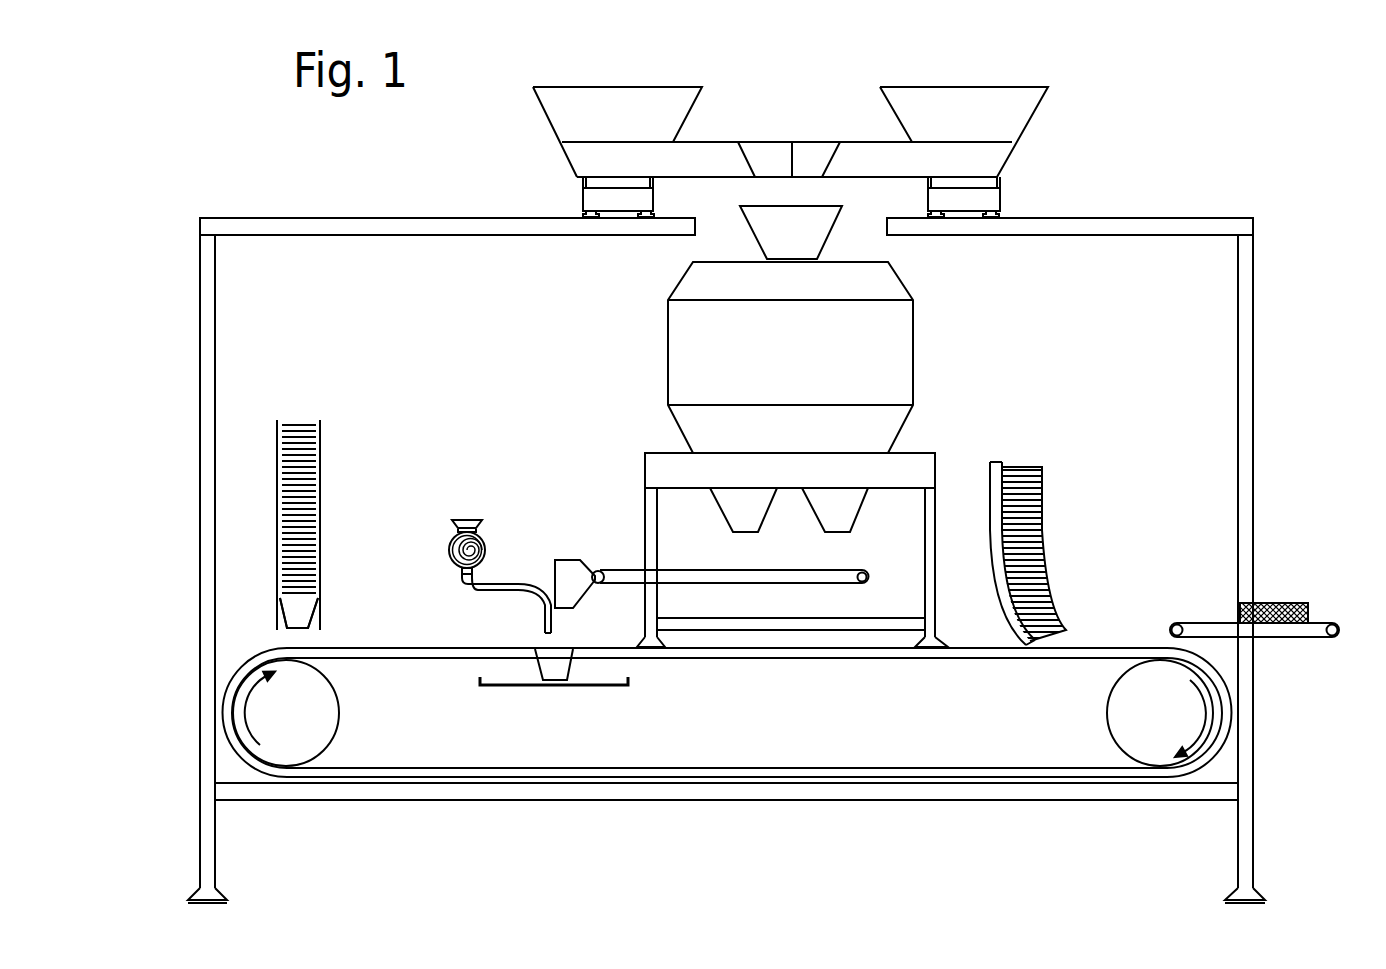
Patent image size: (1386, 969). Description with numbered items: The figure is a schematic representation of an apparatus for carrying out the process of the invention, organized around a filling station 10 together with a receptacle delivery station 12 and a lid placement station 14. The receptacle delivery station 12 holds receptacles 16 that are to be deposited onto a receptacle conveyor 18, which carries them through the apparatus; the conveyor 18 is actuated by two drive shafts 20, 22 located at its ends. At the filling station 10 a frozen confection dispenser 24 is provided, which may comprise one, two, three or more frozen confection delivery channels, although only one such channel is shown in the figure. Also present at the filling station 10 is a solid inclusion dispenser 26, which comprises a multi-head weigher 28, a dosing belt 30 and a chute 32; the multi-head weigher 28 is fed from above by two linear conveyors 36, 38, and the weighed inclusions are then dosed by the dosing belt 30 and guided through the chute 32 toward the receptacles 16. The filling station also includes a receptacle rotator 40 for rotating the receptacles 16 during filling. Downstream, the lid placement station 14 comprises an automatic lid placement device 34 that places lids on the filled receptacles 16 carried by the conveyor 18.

The filling station 10 is at (443, 812).
The receptacle delivery station 12 is at (262, 420).
The lid placement station 14 is at (1073, 455).
The receptacles 16 is at (312, 462).
The receptacle conveyor 18 is at (1005, 660).
The drive shaft 20 is at (292, 745).
The drive shaft 22 is at (1160, 757).
The frozen confection dispenser 24 is at (498, 590).
The solid inclusion dispenser 26 is at (598, 570).
The multi-head weigher 28 is at (668, 325).
The dosing belt 30 is at (793, 583).
The chute 32 is at (560, 560).
The automatic lid placement device 34 is at (993, 485).
The linear conveyor 36 is at (728, 150).
The linear conveyor 38 is at (863, 150).
The receptacle rotator 40 is at (530, 688).